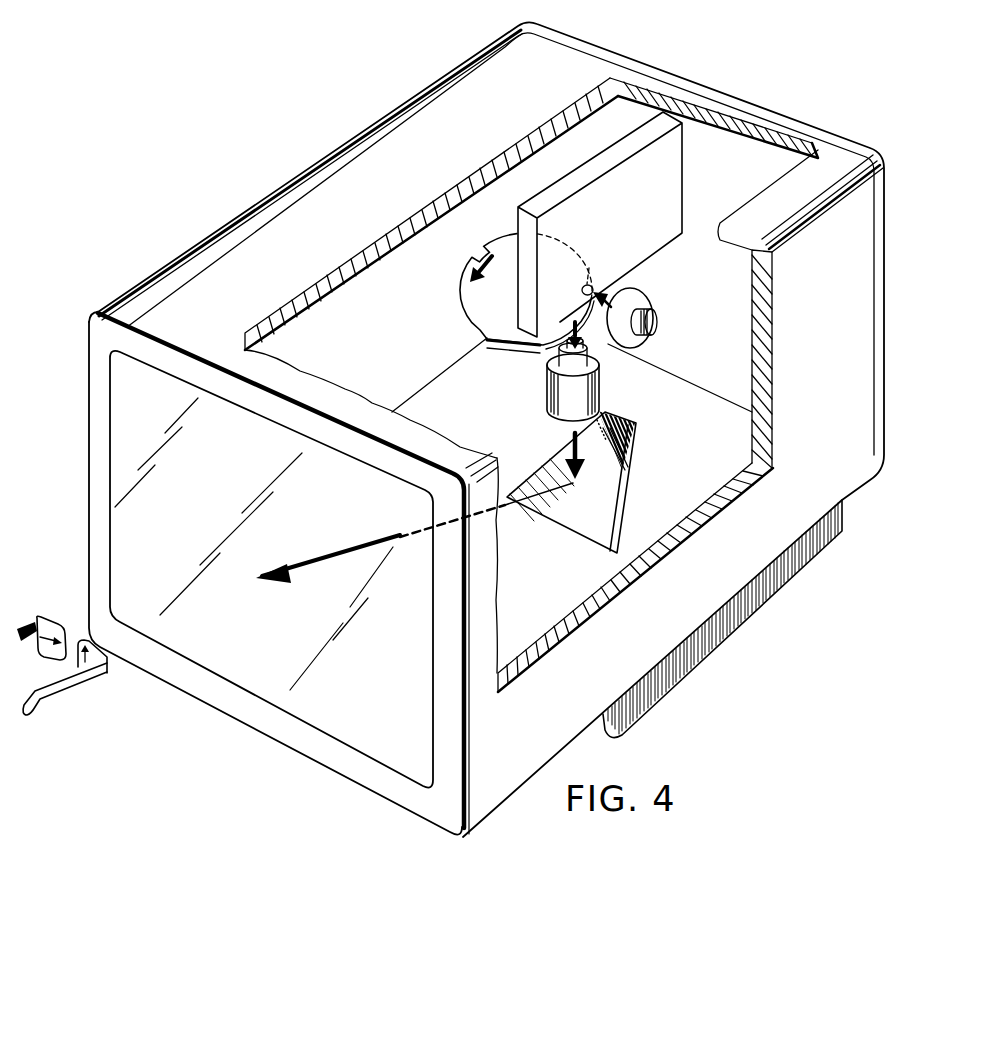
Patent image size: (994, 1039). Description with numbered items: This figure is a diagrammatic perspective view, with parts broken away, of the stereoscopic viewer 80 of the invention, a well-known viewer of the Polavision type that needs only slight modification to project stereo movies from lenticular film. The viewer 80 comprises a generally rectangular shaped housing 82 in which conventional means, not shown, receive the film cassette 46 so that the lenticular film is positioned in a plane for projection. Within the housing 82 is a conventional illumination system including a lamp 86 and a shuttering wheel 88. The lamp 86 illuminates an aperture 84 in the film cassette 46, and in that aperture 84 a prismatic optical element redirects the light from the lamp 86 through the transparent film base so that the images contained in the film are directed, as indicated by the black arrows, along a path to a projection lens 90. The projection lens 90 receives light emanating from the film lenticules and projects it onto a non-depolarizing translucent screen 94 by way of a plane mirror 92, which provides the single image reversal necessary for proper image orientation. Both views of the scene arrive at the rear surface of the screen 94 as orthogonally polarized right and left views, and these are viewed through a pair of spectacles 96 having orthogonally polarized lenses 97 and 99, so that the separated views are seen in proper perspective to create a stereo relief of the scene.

The viewer 80 is at (376, 112).
The housing 82 is at (216, 236).
The film cassette 46 is at (667, 177).
The aperture 84 is at (584, 283).
The lamp 86 is at (648, 308).
The shuttering wheel 88 is at (467, 322).
The projection lens 90 is at (599, 382).
The plane mirror 92 is at (630, 484).
The screen 94 is at (362, 708).
The spectacles 96 is at (108, 679).
The polarized lens 97 is at (52, 617).
The polarized lens 99 is at (103, 647).